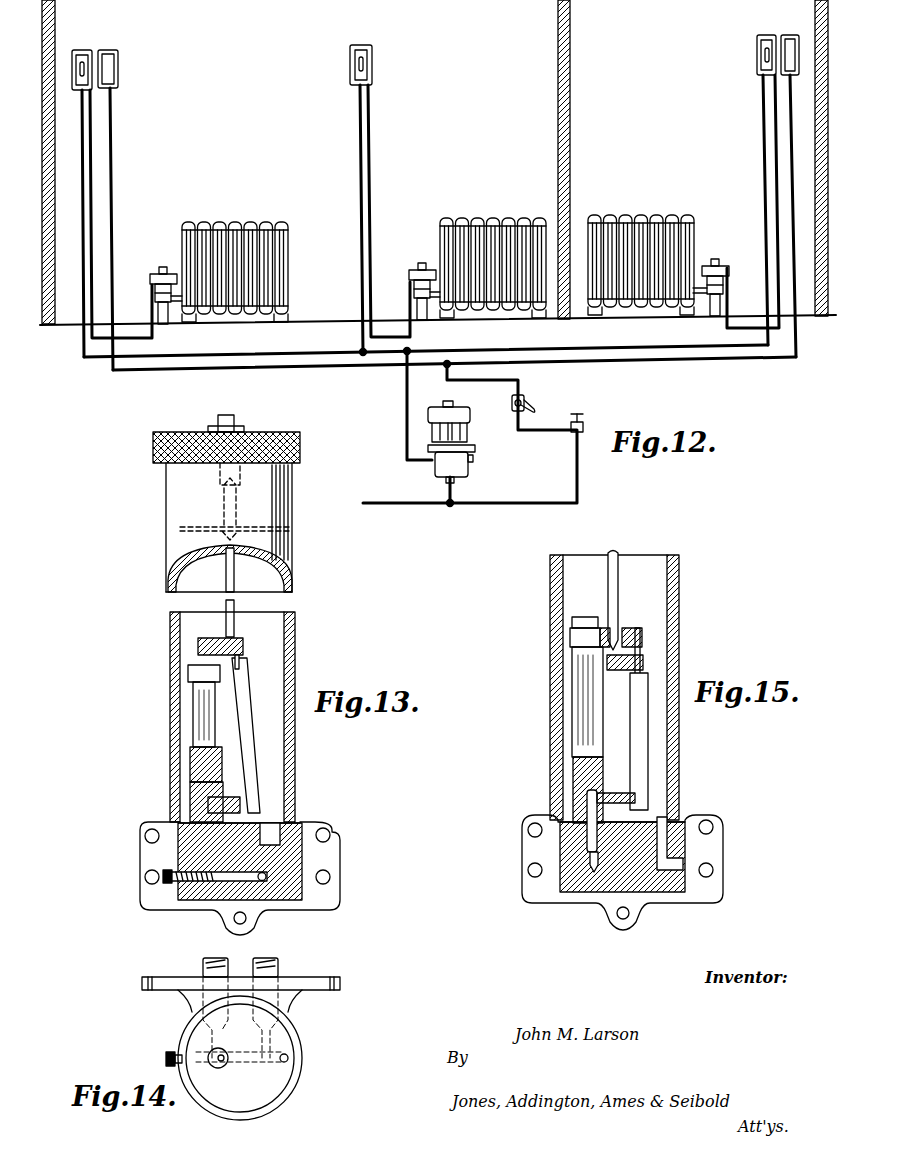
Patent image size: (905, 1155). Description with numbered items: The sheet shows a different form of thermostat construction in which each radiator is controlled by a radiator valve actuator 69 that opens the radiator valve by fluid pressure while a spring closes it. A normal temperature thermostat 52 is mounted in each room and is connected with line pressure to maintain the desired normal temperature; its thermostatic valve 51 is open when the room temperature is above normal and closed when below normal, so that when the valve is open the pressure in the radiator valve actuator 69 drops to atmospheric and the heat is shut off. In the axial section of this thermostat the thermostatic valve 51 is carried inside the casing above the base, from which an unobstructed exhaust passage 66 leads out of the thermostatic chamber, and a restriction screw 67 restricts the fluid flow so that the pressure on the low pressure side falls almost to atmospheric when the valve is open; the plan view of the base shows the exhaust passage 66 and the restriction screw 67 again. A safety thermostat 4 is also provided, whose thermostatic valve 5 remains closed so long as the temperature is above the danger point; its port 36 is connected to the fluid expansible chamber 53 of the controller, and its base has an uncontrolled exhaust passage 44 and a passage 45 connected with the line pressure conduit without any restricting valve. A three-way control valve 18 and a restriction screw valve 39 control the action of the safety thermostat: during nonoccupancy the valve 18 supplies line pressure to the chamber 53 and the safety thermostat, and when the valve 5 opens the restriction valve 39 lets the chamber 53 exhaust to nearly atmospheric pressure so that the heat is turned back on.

In FIG. 12, the safety thermostat 4 is at (108, 70).
In FIG. 15, the safety thermostat 4 is at (688, 619).
In FIG. 12, the normal temperature thermostat 52 is at (80, 60).
In FIG. 13, the normal temperature thermostat 52 is at (298, 745).
In FIG. 12, the radiator valve actuator 69 is at (162, 270).
In FIG. 12, the fluid expansible chamber 53 is at (460, 415).
In FIG. 12, the three-way control valve 18 is at (525, 400).
In FIG. 12, the restriction screw valve 39 is at (583, 430).
In FIG. 13, the thermostatic valve 51 is at (256, 777).
In FIG. 13, the exhaust passage 66 is at (290, 832).
In FIG. 14, the exhaust passage 66 is at (288, 1058).
In FIG. 13, the restriction screw 67 is at (163, 878).
In FIG. 14, the restriction screw 67 is at (166, 1052).
In FIG. 15, the thermostatic valve 5 is at (646, 753).
In FIG. 15, the port 36 is at (618, 793).
In FIG. 15, the exhaust passage 44 is at (662, 835).
In FIG. 15, the passage 45 is at (586, 803).